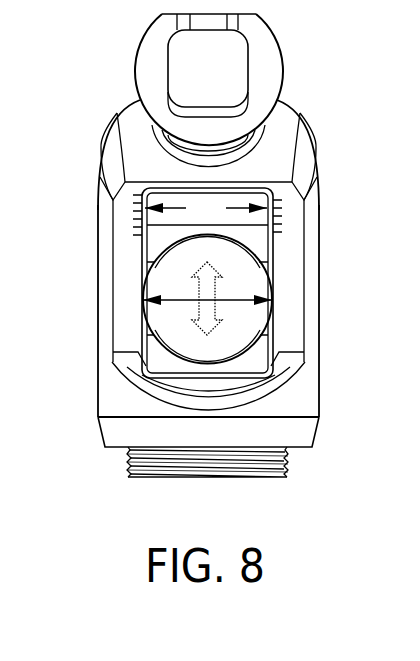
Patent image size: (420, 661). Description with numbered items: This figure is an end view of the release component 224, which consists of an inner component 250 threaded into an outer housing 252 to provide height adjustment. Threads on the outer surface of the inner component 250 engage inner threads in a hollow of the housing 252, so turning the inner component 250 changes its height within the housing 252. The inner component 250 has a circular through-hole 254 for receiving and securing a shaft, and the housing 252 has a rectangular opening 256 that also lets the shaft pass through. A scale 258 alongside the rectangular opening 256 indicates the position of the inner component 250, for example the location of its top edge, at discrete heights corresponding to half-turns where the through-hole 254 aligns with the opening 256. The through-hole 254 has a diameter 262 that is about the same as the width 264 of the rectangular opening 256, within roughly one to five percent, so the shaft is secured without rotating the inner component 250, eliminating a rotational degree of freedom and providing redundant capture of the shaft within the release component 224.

The release component 224 is at (90, 100).
The inner component 250 is at (227, 480).
The housing 252 is at (125, 143).
The circular through-hole 254 is at (248, 316).
The rectangular opening 256 is at (262, 190).
The scale 258 is at (284, 214).
The diameter 262 is at (145, 300).
The width 264 is at (206, 209).